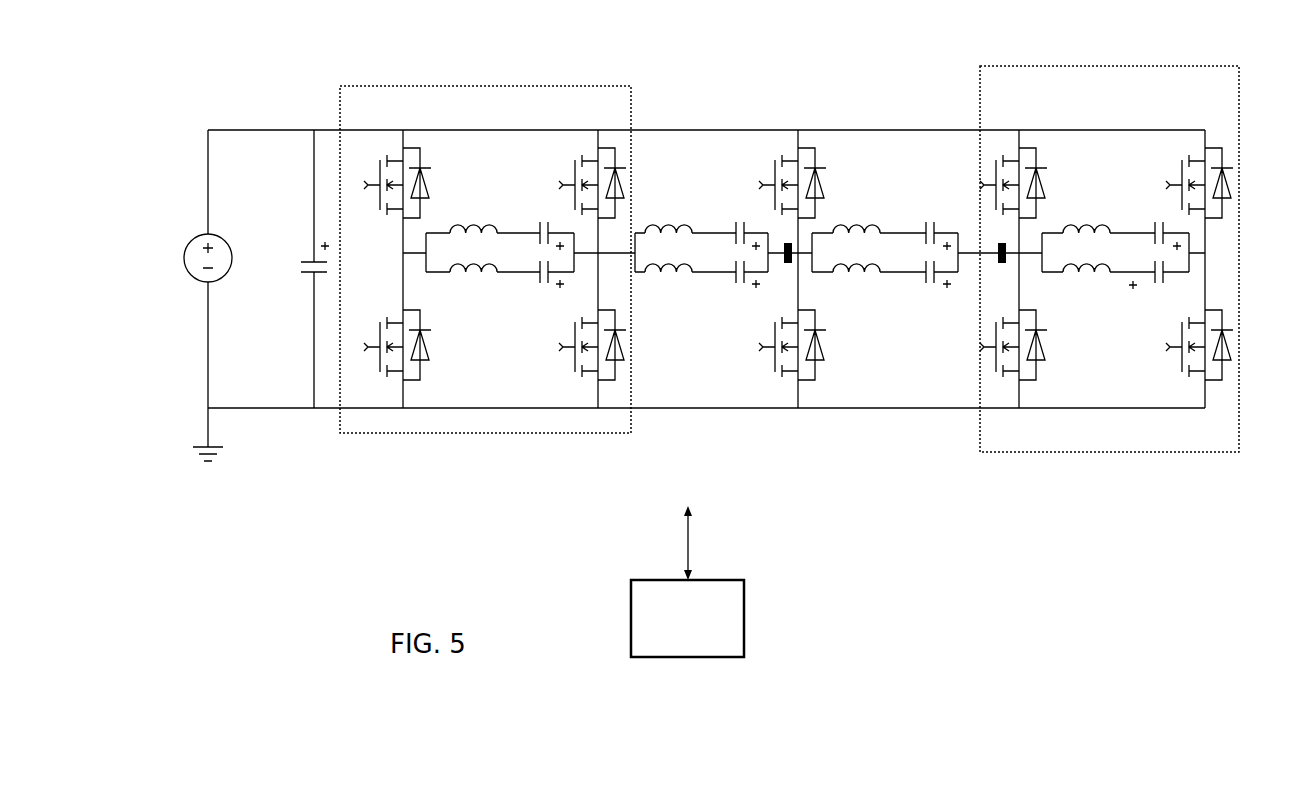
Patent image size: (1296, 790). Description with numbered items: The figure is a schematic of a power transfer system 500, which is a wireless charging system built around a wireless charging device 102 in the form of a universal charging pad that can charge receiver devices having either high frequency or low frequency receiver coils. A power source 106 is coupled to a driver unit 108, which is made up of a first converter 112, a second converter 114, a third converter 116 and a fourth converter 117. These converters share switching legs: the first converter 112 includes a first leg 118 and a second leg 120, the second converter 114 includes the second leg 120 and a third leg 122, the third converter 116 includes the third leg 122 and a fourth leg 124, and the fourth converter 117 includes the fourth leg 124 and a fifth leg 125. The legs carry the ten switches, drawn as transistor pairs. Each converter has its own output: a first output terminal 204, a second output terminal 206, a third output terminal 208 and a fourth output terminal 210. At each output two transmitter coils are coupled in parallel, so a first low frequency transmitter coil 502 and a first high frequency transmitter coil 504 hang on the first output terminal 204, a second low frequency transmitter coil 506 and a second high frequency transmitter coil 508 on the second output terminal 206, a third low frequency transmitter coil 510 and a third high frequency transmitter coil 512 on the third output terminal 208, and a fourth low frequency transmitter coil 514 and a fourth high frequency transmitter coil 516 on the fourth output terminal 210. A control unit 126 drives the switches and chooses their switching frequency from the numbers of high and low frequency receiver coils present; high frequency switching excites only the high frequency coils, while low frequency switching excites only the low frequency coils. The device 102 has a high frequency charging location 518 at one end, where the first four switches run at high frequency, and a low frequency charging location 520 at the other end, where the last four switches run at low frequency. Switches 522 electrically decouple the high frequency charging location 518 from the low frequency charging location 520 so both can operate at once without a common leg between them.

The wireless charging device 102 is at (186, 490).
The power source 106 is at (195, 242).
The driver unit 108 is at (378, 37).
The first converter 112 is at (370, 110).
The second converter 114 is at (573, 97).
The third converter 116 is at (764, 81).
The fourth converter 117 is at (992, 111).
The first leg 118 is at (403, 397).
The second leg 120 is at (598, 397).
The third leg 122 is at (798, 397).
The fourth leg 124 is at (1021, 389).
The fifth leg 125 is at (1205, 397).
The control unit 126 is at (745, 615).
The first output terminal 204 is at (413, 295).
The second output terminal 206 is at (630, 296).
The third output terminal 208 is at (807, 297).
The fourth output terminal 210 is at (1027, 296).
The power transfer system 500 is at (1117, 629).
The first low frequency transmitter coil 502 is at (466, 226).
The first high frequency transmitter coil 504 is at (466, 265).
The second low frequency transmitter coil 506 is at (661, 226).
The second high frequency transmitter coil 508 is at (661, 265).
The third low frequency transmitter coil 510 is at (844, 226).
The third high frequency transmitter coil 512 is at (844, 265).
The fourth low frequency transmitter coil 514 is at (1081, 226).
The fourth high frequency transmitter coil 516 is at (1081, 265).
The high frequency charging location 518 is at (369, 86).
The low frequency charging location 520 is at (1105, 66).
The switches 522 is at (788, 243).